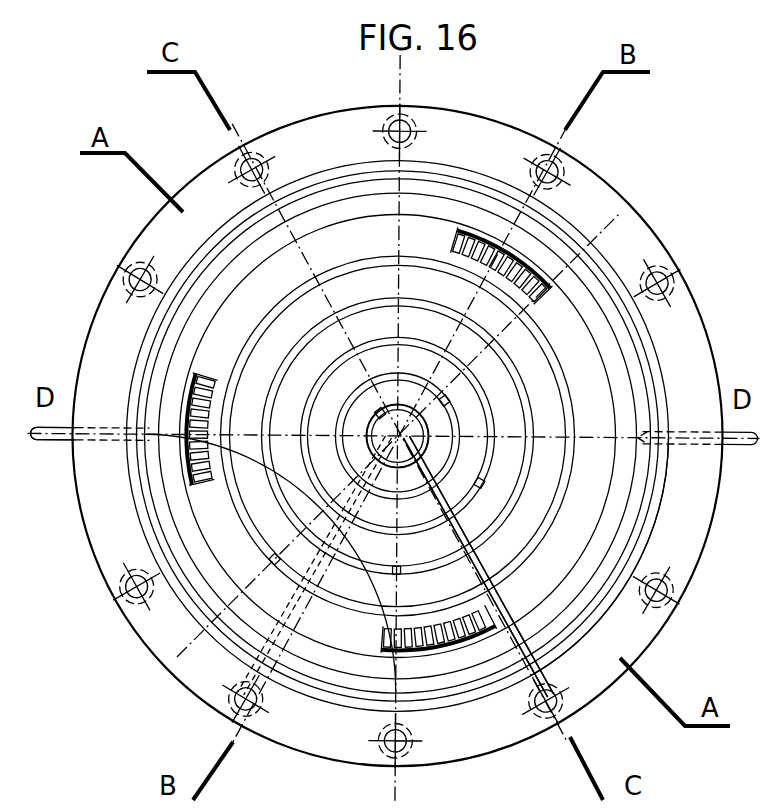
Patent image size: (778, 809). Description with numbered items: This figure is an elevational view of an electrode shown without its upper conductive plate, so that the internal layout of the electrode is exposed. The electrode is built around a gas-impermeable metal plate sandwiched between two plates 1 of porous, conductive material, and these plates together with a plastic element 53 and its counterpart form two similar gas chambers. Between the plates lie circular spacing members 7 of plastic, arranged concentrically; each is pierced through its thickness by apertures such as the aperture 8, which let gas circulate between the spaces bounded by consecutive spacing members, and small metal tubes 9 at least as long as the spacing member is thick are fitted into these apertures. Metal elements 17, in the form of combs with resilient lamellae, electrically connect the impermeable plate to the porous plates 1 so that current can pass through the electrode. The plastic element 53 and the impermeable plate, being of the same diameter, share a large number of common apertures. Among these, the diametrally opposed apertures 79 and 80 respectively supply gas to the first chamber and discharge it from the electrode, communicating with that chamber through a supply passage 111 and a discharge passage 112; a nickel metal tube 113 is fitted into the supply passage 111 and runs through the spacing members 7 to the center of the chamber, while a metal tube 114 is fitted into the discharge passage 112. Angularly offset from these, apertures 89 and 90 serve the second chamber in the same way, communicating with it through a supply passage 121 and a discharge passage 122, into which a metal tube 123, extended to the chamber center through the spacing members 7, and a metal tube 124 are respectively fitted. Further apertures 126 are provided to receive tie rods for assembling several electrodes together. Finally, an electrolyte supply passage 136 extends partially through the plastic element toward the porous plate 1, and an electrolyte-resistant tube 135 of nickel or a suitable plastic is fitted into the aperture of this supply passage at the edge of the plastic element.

The porous conductive plate 1 is at (222, 504).
The circular spacing member 7 is at (455, 352).
The aperture 8 is at (277, 557).
The small metal tube 9 is at (265, 562).
The metal element 17 is at (400, 118).
The plastic element 53 is at (115, 330).
The gas supply aperture 79 is at (550, 712).
The gas discharge aperture 80 is at (252, 150).
The gas supply aperture 89 is at (243, 697).
The gas discharge aperture 90 is at (503, 238).
The supply passage 111 is at (565, 660).
The discharge passage 112 is at (262, 232).
The metal tube 113 is at (600, 636).
The metal tube 114 is at (300, 262).
The supply passage 121 is at (384, 652).
The discharge passage 122 is at (515, 356).
The metal tube 123 is at (263, 608).
The metal tube 124 is at (458, 232).
The tie rod aperture 126 is at (402, 748).
The electrolyte-resistant tube 135 is at (60, 452).
The electrolyte supply passage 136 is at (112, 405).